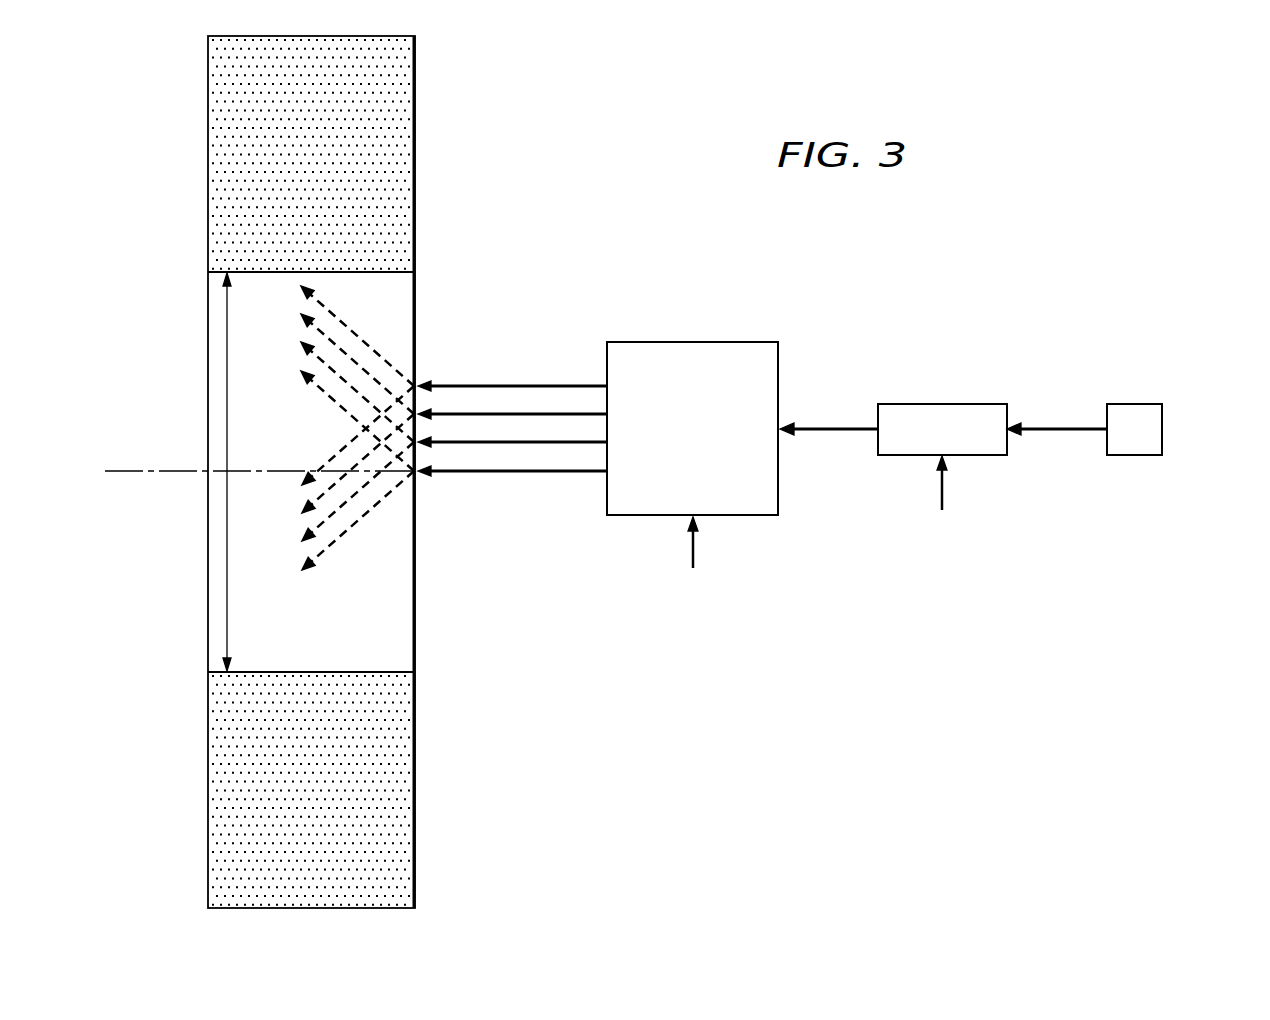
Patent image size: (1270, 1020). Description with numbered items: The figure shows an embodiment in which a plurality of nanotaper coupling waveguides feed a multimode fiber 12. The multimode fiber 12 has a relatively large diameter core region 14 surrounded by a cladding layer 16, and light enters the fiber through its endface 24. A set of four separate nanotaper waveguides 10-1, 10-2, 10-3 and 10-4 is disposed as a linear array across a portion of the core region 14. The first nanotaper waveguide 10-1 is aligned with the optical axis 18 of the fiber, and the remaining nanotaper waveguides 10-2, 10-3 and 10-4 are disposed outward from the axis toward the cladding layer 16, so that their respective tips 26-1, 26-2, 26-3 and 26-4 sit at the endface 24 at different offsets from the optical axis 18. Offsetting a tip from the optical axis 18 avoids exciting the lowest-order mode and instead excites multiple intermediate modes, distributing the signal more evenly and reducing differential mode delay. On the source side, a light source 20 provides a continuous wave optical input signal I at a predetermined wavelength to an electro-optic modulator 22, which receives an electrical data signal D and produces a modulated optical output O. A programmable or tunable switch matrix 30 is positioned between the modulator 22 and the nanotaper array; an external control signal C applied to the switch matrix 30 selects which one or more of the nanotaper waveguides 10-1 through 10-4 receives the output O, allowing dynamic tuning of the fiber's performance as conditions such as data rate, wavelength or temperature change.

The first nanotaper waveguide 10-1 is at (523, 476).
The nanotaper waveguide 10-2 is at (566, 447).
The nanotaper waveguide 10-3 is at (564, 411).
The nanotaper waveguide 10-4 is at (526, 383).
The multimode fiber 12 is at (437, 840).
The core region 14 is at (227, 598).
The cladding layer 16 is at (215, 798).
The optical axis 18 is at (125, 472).
The light source 20 is at (1163, 430).
The electro-optic modulator 22 is at (945, 404).
The endface 24 is at (410, 637).
The nanotaper tip 26-1 is at (418, 476).
The nanotaper tip 26-2 is at (420, 447).
The nanotaper tip 26-3 is at (420, 410).
The nanotaper tip 26-4 is at (418, 383).
The switch matrix 30 is at (738, 342).